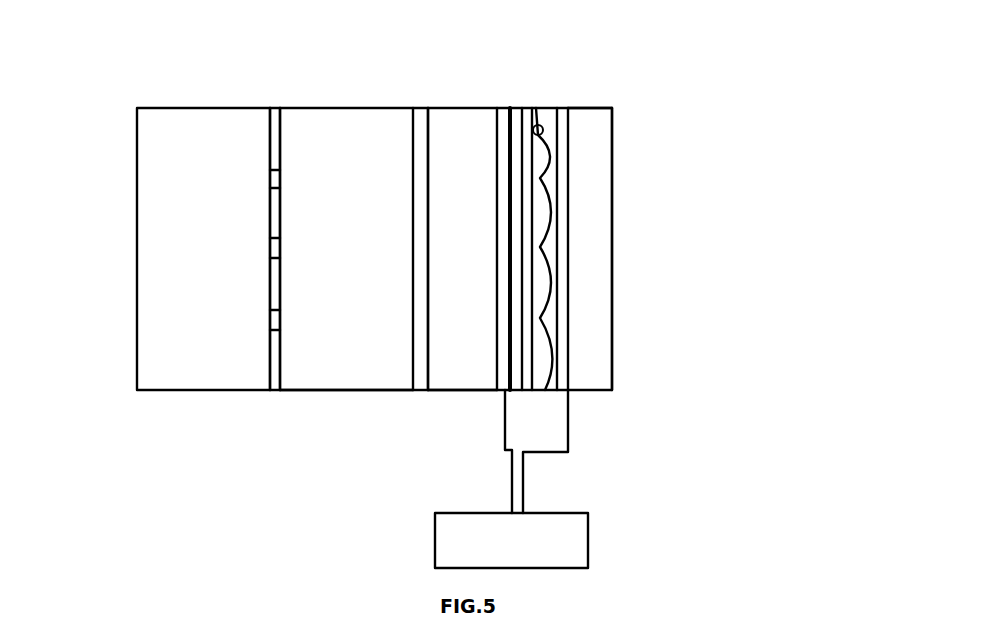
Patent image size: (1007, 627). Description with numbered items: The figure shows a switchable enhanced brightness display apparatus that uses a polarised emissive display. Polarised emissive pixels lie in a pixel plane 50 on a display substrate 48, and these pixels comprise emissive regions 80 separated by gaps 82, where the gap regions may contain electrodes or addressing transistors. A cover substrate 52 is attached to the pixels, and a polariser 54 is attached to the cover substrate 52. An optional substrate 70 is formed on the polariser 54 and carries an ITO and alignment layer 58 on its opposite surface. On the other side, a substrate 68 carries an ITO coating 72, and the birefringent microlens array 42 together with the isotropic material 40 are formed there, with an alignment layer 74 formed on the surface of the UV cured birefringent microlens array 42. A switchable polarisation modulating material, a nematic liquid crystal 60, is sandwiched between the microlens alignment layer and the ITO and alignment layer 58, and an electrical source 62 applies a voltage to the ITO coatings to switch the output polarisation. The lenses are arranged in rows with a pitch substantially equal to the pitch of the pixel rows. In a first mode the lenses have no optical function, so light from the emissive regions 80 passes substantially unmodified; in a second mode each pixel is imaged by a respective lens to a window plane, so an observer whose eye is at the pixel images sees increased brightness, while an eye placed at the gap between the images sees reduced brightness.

The isotropic material 40 is at (552, 393).
The birefringent microlens array 42 is at (538, 108).
The display substrate 48 is at (205, 392).
The pixel plane 50 is at (280, 392).
The cover substrate 52 is at (352, 392).
The polariser 54 is at (423, 392).
The ITO and alignment layer 58 is at (500, 108).
The nematic liquid crystal 60 is at (513, 108).
The electrical source 62 is at (511, 540).
The substrate 68 is at (587, 140).
The substrate 70 is at (450, 382).
The ITO coating 72 is at (562, 108).
The alignment layer 74 is at (522, 108).
The emissive regions 80 is at (267, 142).
The gaps 82 is at (267, 172).